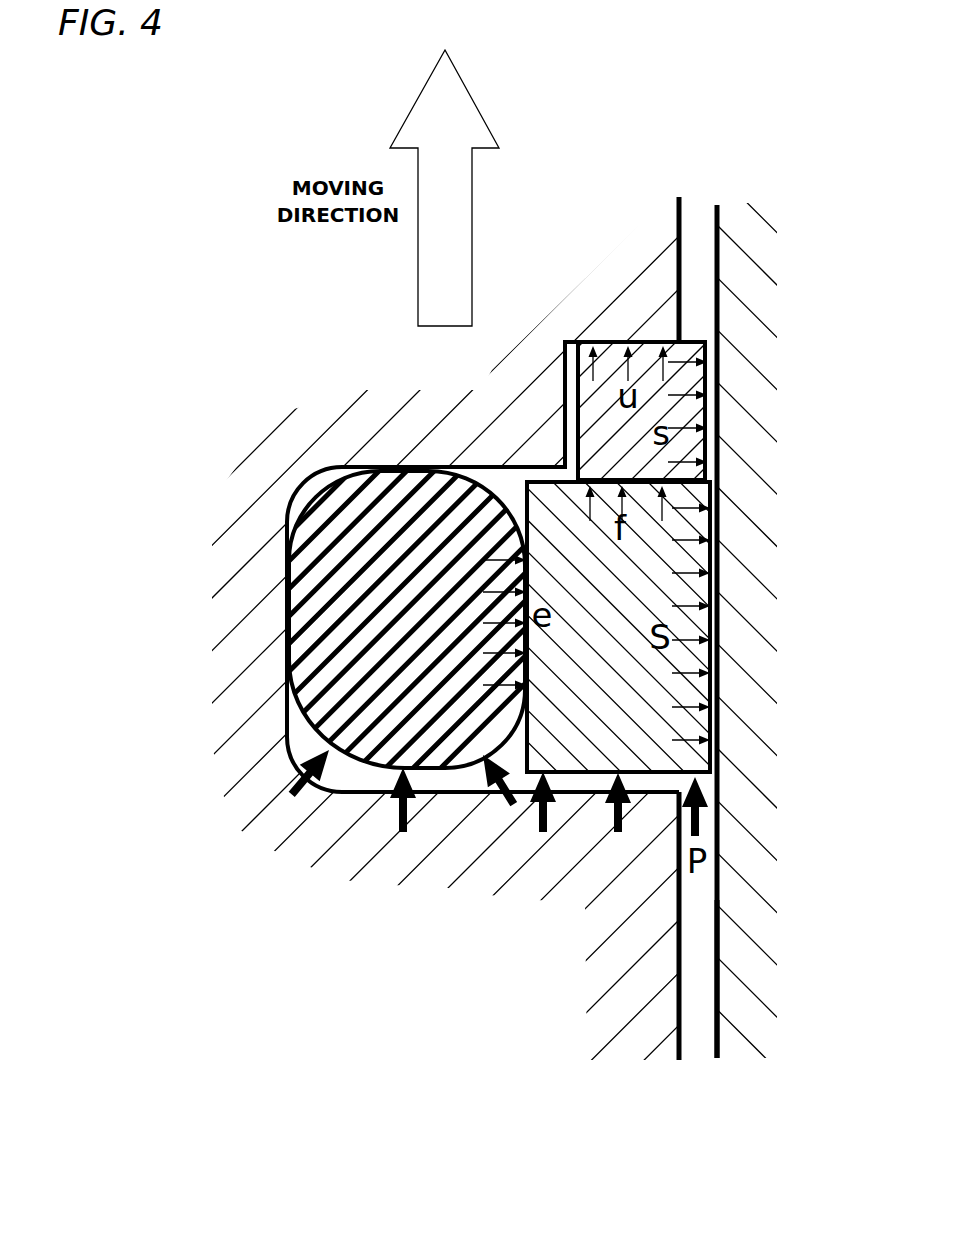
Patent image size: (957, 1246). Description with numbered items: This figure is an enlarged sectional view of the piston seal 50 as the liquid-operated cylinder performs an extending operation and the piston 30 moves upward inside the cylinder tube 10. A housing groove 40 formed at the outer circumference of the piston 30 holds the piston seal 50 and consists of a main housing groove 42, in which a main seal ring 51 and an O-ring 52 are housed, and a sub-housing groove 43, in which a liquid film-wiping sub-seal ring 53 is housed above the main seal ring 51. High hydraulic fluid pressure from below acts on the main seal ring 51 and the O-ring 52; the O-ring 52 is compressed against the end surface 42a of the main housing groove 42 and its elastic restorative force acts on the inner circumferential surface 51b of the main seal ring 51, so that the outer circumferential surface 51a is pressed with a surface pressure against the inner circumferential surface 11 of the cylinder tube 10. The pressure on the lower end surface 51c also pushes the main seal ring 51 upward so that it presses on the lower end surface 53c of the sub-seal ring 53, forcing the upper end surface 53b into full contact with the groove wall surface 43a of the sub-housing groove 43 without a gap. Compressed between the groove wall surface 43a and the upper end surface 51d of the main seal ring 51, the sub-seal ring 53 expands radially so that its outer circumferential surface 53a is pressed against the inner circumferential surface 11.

The cylinder tube 10 is at (728, 1027).
The inner circumferential surface of the cylinder tube 11 is at (712, 982).
The piston 30 is at (633, 1017).
The housing groove 40 is at (345, 792).
The main housing groove 42 is at (343, 467).
The end surface of the main housing groove 42a is at (485, 470).
The sub-housing groove 43 is at (562, 340).
The groove wall surface of the sub-housing groove 43a is at (595, 340).
The piston seal 50 is at (318, 497).
The main seal ring 51 is at (712, 736).
The outer circumferential surface of the main seal ring 51a is at (712, 648).
The inner circumferential surface of the main seal ring 51b is at (507, 753).
The lower end surface of the main seal ring 51c is at (570, 777).
The upper end surface of the main seal ring 51d is at (704, 478).
The O-ring 52 is at (305, 635).
The liquid film-wiping sub-seal ring 53 is at (688, 417).
The outer circumferential surface of the sub-seal ring 53a is at (708, 378).
The upper end surface of the sub-seal ring 53b is at (656, 337).
The lower end surface of the sub-seal ring 53c is at (700, 484).